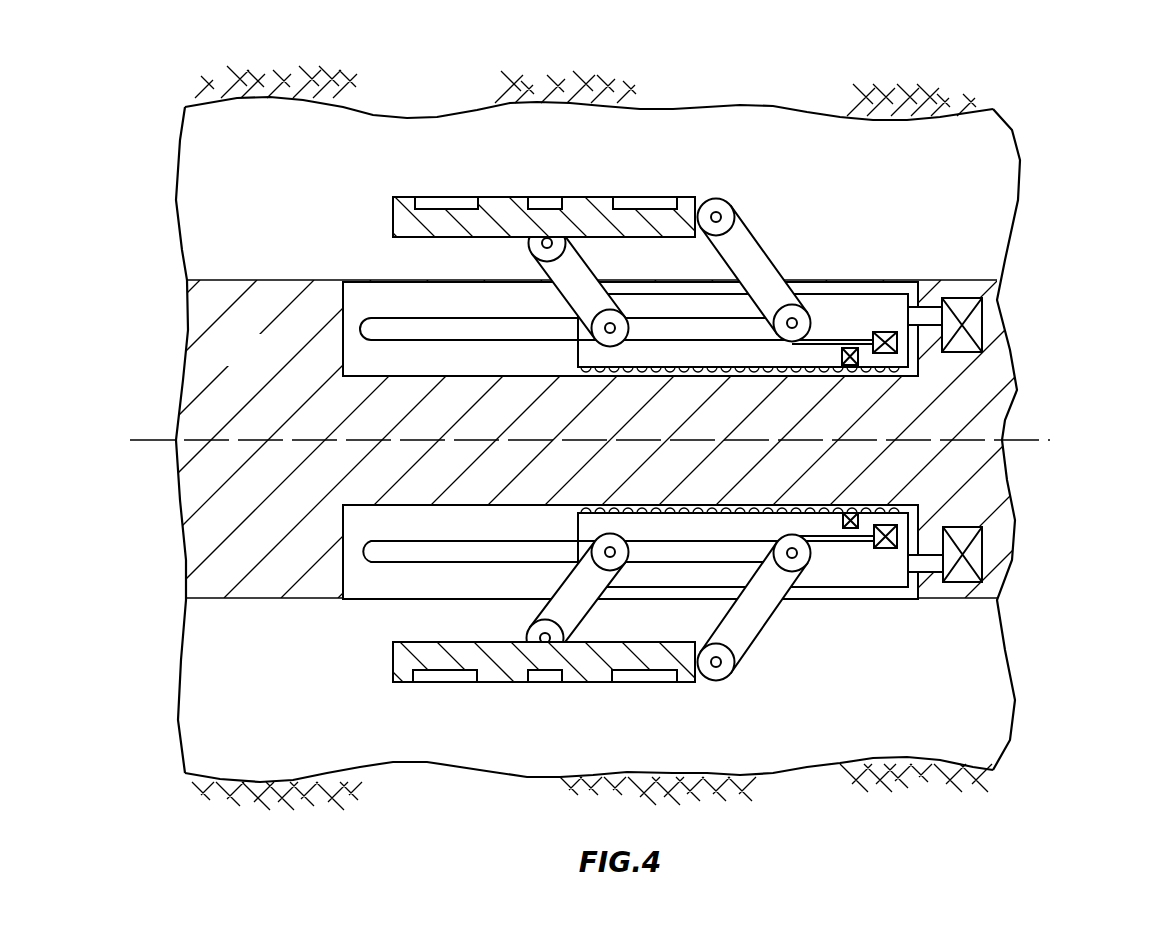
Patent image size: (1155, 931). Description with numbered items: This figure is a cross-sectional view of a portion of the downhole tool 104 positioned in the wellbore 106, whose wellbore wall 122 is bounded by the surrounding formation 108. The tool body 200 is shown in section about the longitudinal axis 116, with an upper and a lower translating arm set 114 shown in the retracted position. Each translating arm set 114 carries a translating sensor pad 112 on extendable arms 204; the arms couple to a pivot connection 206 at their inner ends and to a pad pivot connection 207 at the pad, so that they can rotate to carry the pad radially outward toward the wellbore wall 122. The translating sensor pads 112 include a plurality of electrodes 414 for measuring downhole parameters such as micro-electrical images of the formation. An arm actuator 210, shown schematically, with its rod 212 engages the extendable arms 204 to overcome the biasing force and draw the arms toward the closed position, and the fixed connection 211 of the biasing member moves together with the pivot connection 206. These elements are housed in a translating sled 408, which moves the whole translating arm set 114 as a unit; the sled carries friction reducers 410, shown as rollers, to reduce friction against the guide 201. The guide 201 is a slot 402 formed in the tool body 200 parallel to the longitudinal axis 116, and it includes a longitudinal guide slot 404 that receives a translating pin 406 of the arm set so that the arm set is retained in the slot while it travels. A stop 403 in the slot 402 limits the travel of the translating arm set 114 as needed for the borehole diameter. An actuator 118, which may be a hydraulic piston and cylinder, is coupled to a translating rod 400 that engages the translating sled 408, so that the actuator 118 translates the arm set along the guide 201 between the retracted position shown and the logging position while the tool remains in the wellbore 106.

The downhole tool 104 is at (212, 262).
The wellbore 106 is at (652, 748).
The formation 108 is at (723, 55).
The translating sensor pad 112 is at (577, 197).
The translating arm set 114 is at (775, 232).
The longitudinal axis 116 is at (172, 440).
The actuator 118 is at (985, 315).
The wellbore wall 122 is at (236, 782).
The tool body 200 is at (225, 363).
The guide 201 is at (372, 308).
The extendable arm 204 is at (838, 354).
The pivot connection 206 is at (592, 325).
The pad pivot connection 207 is at (547, 258).
The arm actuator 210 is at (895, 294).
The fixed connection 211 is at (885, 331).
The rod 212 is at (828, 372).
The translating rod 400 is at (921, 303).
The slot 402 is at (418, 310).
The stop 403 is at (356, 567).
The longitudinal guide slot 404 is at (452, 330).
The translating pin 406 is at (786, 305).
The translating sled 408 is at (923, 285).
The friction reducer 410 is at (880, 488).
The electrodes 414 is at (536, 197).